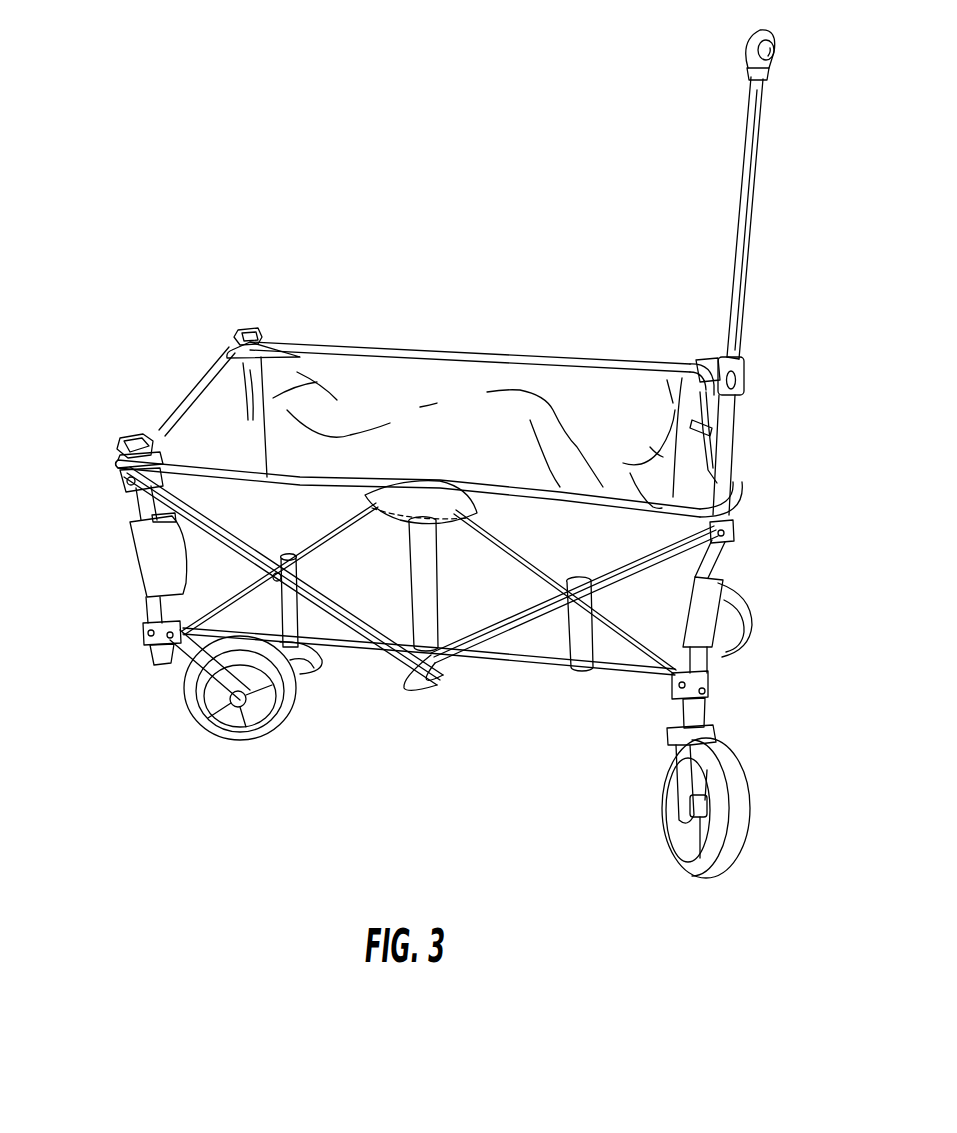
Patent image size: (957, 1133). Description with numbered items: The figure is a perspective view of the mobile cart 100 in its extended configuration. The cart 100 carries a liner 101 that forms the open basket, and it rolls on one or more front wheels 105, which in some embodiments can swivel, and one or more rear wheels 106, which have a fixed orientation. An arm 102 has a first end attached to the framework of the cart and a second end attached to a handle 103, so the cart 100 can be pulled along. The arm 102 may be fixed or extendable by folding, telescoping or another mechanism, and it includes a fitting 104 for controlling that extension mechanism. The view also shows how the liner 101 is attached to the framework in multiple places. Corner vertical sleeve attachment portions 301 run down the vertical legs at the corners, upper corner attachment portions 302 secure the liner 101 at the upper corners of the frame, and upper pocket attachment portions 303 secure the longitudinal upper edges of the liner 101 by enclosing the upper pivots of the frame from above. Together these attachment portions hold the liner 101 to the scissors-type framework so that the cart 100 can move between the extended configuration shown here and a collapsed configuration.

The mobile cart 100 is at (190, 248).
The liner 101 is at (577, 403).
The arm 102 is at (737, 300).
The handle 103 is at (742, 43).
The fitting 104 is at (752, 371).
The front wheel 105 is at (710, 833).
The rear wheel 106 is at (200, 710).
The corner vertical sleeve attachment portion 301 is at (150, 560).
The upper corner attachment portion 302 is at (172, 460).
The upper pocket attachment portion 303 is at (432, 487).